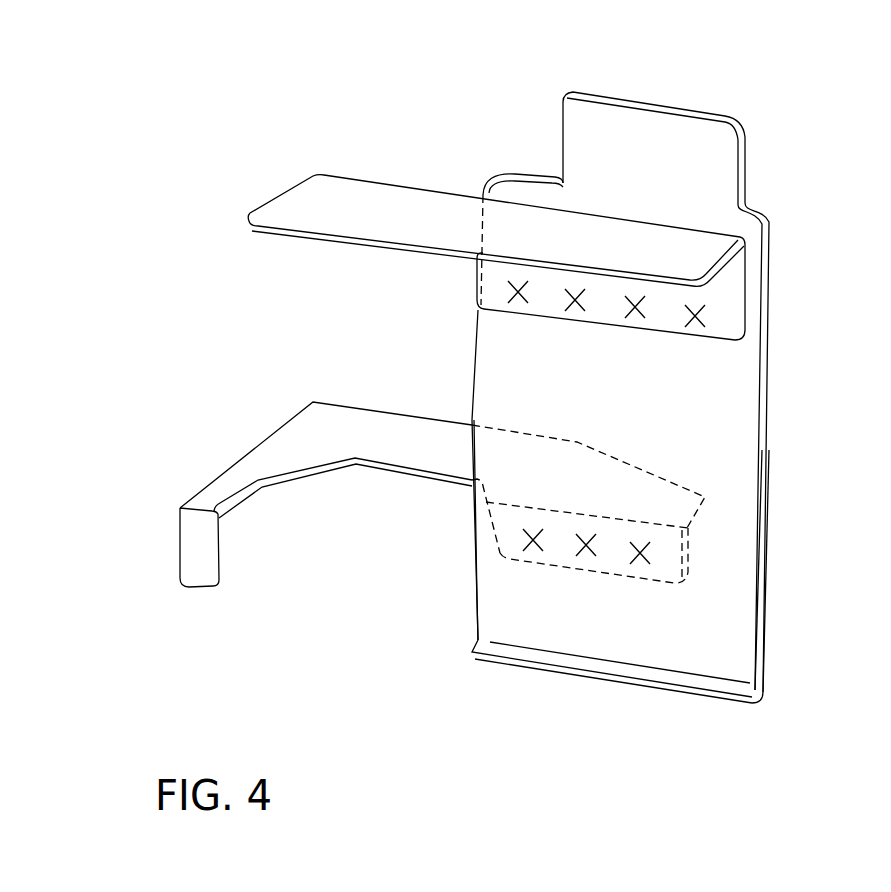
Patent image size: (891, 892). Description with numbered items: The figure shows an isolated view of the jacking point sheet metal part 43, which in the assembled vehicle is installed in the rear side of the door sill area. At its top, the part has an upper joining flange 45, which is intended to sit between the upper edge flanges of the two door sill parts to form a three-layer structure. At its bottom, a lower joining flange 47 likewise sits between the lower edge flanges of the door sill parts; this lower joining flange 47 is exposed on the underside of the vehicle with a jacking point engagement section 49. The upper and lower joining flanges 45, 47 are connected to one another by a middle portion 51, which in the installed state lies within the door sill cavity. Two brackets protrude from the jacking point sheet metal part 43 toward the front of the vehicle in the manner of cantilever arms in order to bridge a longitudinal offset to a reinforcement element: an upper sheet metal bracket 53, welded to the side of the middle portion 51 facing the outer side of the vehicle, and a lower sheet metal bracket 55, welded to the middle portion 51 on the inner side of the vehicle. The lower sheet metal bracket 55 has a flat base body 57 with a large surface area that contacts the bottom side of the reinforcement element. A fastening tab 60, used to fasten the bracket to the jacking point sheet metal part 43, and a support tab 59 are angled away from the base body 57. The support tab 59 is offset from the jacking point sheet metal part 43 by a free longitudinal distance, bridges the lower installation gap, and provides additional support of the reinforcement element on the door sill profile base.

The jacking point sheet metal part 43 is at (750, 159).
The upper joining flange 45 is at (625, 100).
The lower joining flange 47 is at (717, 650).
The jacking point engagement section 49 is at (628, 678).
The middle portion 51 is at (682, 406).
The upper sheet metal bracket 53 is at (370, 197).
The lower sheet metal bracket 55 is at (440, 605).
The base body 57 is at (317, 450).
The support tab 59 is at (198, 563).
The fastening tab 60 is at (518, 527).